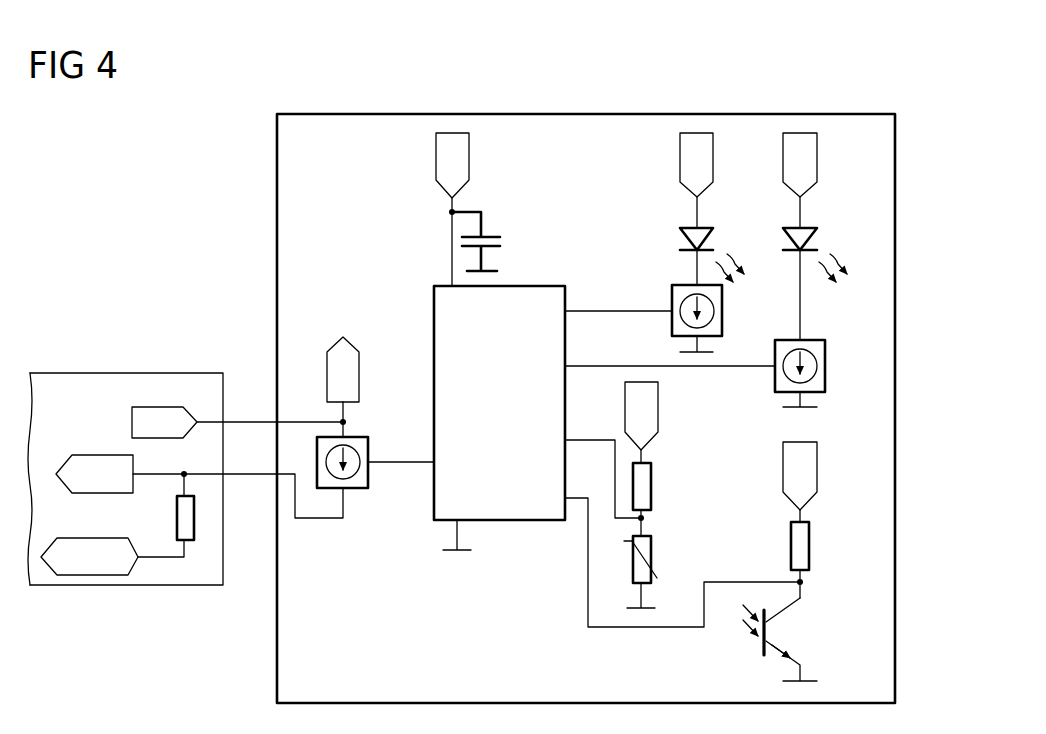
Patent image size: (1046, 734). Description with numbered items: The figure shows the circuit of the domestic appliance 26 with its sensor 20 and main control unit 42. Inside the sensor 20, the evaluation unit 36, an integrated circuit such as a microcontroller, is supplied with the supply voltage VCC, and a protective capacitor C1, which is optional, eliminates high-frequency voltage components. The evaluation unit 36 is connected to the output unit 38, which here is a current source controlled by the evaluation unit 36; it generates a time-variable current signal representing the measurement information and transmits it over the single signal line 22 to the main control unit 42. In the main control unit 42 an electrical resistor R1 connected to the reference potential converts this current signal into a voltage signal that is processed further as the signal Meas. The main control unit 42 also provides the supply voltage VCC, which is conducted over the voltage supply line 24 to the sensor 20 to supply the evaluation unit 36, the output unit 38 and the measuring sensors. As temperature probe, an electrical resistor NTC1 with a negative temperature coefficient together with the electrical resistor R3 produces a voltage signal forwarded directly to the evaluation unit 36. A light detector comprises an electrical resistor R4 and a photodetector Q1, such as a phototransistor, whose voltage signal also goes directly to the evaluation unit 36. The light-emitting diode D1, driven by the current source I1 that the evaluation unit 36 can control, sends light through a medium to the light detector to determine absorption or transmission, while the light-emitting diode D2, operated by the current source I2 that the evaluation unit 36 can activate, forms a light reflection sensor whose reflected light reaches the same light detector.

The sensor 20 is at (575, 113).
The domestic appliance 26 is at (86, 170).
The main control unit 42 is at (124, 373).
The voltage supply line 24 is at (249, 420).
The signal line 22 is at (250, 478).
The evaluation unit 36 is at (432, 312).
The output unit 38 is at (370, 447).
The electrical resistor R1 is at (177, 525).
The protective capacitor C1 is at (502, 242).
The light-emitting diode D1 is at (683, 240).
The light-emitting diode D2 is at (787, 240).
The current source I1 is at (725, 312).
The current source I2 is at (828, 367).
The electrical resistor R3 is at (654, 488).
The electrical resistor with negative temperature coefficient NTC1 is at (654, 548).
The electrical resistor R4 is at (811, 548).
The photodetector Q1 is at (775, 630).